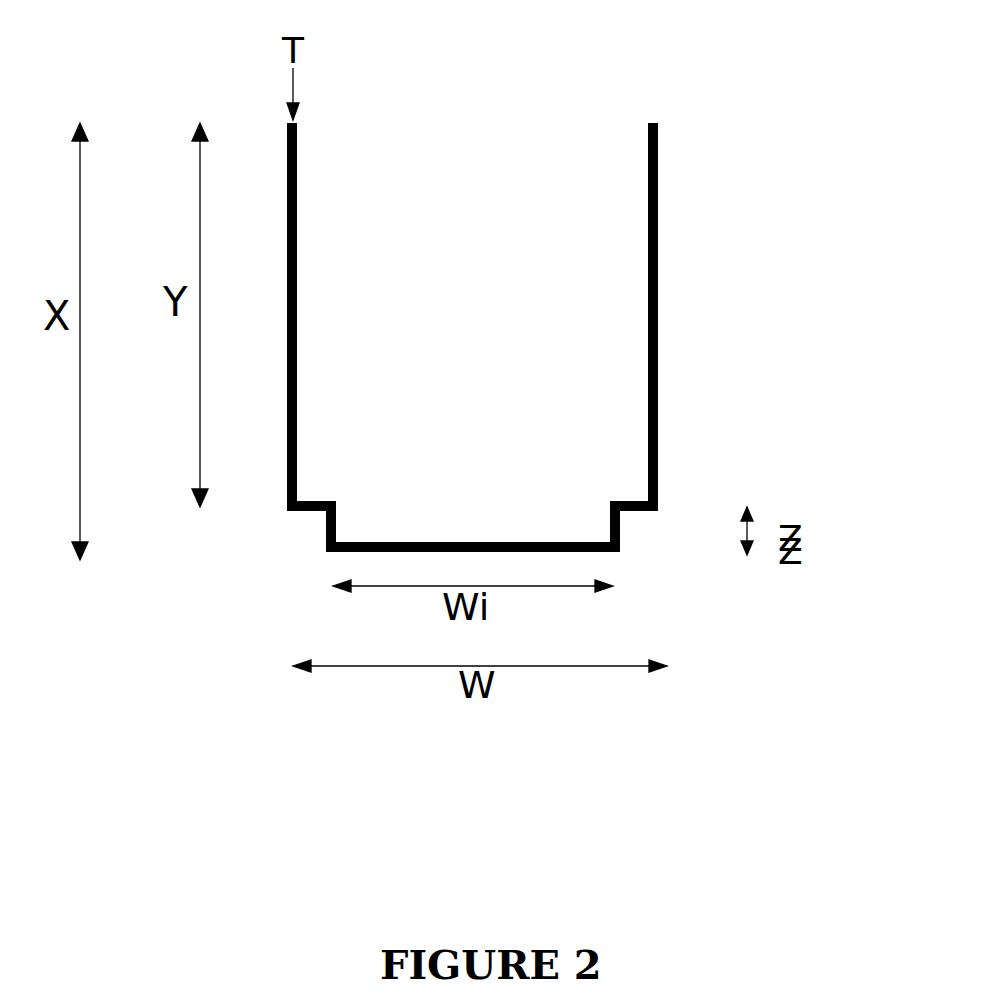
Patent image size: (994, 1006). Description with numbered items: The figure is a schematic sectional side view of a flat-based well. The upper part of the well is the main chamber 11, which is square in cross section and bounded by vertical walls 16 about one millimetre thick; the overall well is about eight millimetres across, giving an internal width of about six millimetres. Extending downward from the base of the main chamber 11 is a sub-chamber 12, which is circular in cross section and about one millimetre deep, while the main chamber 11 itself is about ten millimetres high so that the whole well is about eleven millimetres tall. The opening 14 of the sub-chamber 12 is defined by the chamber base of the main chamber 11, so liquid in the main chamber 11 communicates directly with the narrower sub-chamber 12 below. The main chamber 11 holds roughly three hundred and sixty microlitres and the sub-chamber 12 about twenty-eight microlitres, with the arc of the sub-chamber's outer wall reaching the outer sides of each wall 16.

The main chamber 11 is at (609, 327).
The sub-chamber 12 is at (470, 524).
The opening of the sub-chamber 14 is at (579, 502).
The wall of the main chamber 16 is at (675, 159).